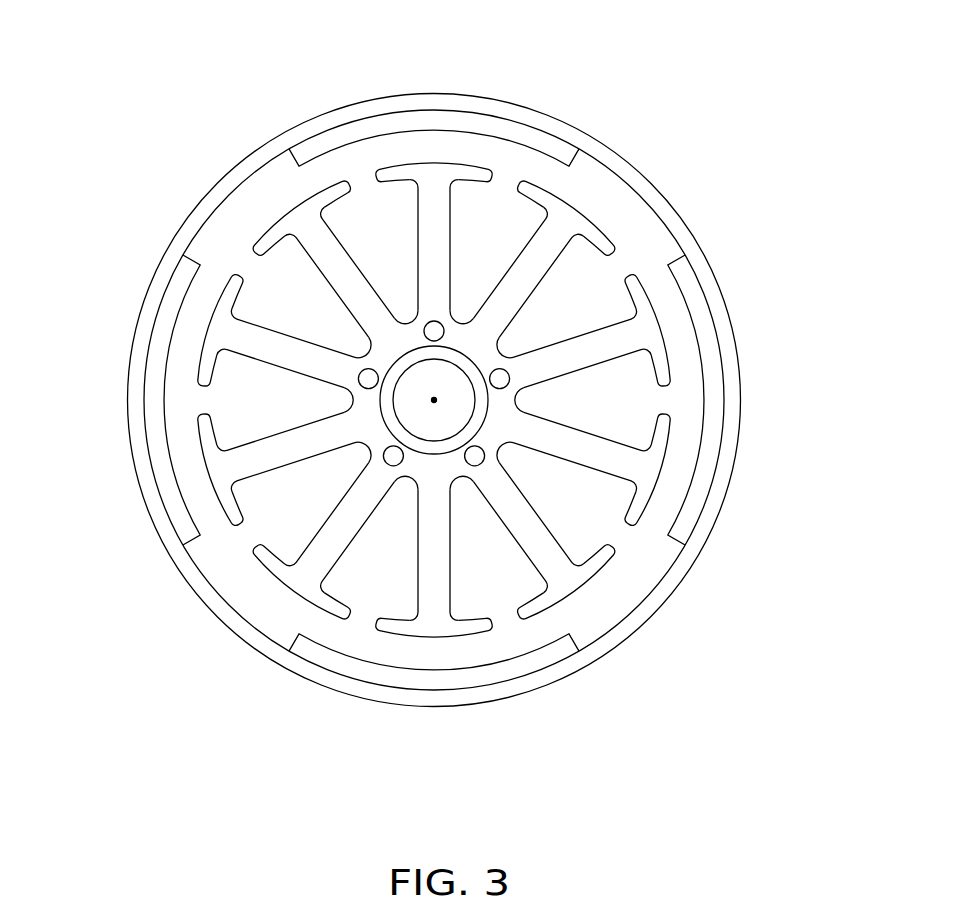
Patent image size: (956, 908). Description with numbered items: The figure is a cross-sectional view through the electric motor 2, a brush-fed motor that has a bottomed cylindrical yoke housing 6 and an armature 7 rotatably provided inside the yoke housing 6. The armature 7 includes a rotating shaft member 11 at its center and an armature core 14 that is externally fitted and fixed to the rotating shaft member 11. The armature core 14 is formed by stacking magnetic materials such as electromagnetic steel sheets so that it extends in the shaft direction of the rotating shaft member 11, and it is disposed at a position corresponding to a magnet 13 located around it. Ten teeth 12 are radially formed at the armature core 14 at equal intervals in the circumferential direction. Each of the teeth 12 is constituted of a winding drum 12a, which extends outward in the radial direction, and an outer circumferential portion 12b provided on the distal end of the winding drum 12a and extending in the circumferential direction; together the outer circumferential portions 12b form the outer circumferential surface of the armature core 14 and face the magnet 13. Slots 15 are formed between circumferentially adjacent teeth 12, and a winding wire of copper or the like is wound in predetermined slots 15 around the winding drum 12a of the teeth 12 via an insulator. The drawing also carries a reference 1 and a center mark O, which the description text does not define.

The timepiece movement 1 is at (277, 80).
The electric motor 2 is at (680, 80).
The yoke housing 6 is at (718, 530).
The armature 7 is at (612, 213).
The rotating shaft member 11 is at (434, 433).
The teeth 12 is at (203, 327).
The winding drum 12a is at (323, 533).
The outer circumferential portion 12b is at (293, 595).
The magnet 13 is at (434, 113).
The armature core 14 is at (290, 204).
The slots 15 is at (622, 265).
The center axis O is at (434, 400).